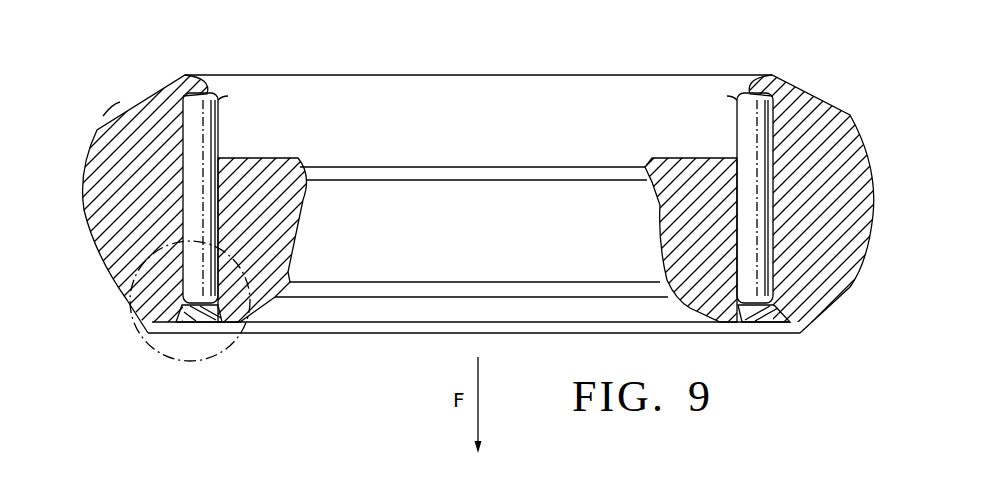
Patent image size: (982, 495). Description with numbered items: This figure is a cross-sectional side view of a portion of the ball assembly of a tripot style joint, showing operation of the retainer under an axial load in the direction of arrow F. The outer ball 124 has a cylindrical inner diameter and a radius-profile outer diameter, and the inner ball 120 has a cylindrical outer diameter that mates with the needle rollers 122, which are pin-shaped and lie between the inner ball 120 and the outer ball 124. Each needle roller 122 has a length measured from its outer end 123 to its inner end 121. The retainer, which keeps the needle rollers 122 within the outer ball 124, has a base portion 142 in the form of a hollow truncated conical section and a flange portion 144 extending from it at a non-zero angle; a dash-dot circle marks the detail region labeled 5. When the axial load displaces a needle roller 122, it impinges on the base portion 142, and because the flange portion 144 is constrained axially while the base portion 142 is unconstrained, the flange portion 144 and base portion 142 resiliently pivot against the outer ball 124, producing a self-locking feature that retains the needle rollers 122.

The outer ball 124 is at (85, 143).
The inner ball 120 is at (299, 168).
The inner end 121 is at (133, 326).
The needle roller 122 is at (224, 97).
The outer end 123 is at (191, 99).
The base portion 142 is at (207, 324).
The flange portion 144 is at (176, 315).
The detail circle (FIG. 5) 5 is at (236, 354).